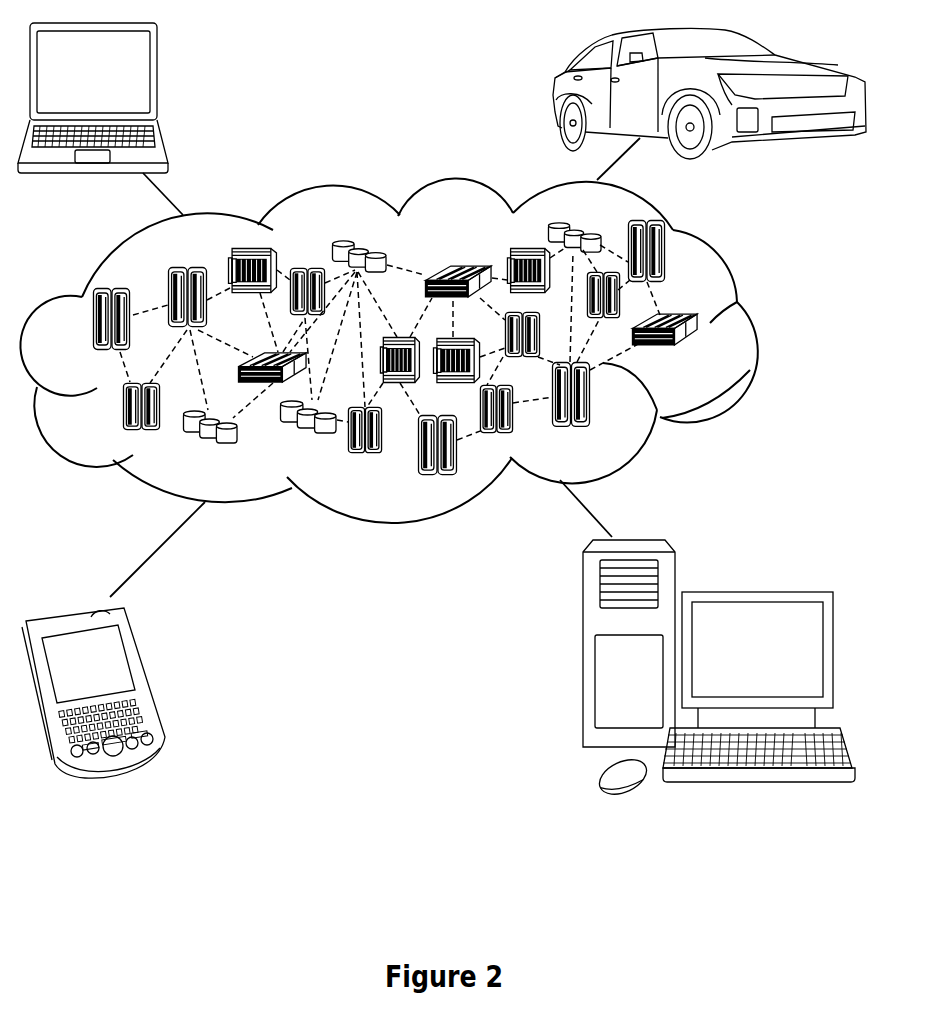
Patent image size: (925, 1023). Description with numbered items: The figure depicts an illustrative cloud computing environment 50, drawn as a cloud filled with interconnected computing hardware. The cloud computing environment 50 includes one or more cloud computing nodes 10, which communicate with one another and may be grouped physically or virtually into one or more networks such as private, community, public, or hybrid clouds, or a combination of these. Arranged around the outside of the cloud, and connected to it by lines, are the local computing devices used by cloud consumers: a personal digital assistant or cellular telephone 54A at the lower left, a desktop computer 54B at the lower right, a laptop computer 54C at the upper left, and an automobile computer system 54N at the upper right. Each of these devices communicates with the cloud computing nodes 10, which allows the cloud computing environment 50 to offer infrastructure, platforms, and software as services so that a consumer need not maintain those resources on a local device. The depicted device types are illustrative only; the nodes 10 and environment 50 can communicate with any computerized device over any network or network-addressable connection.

The cloud computing node 10 is at (698, 355).
The cloud computing environment 50 is at (755, 330).
The personal digital assistant or cellular telephone 54A is at (145, 672).
The desktop computer 54B is at (756, 590).
The laptop computer 54C is at (157, 80).
The automobile computer system 54N is at (553, 91).